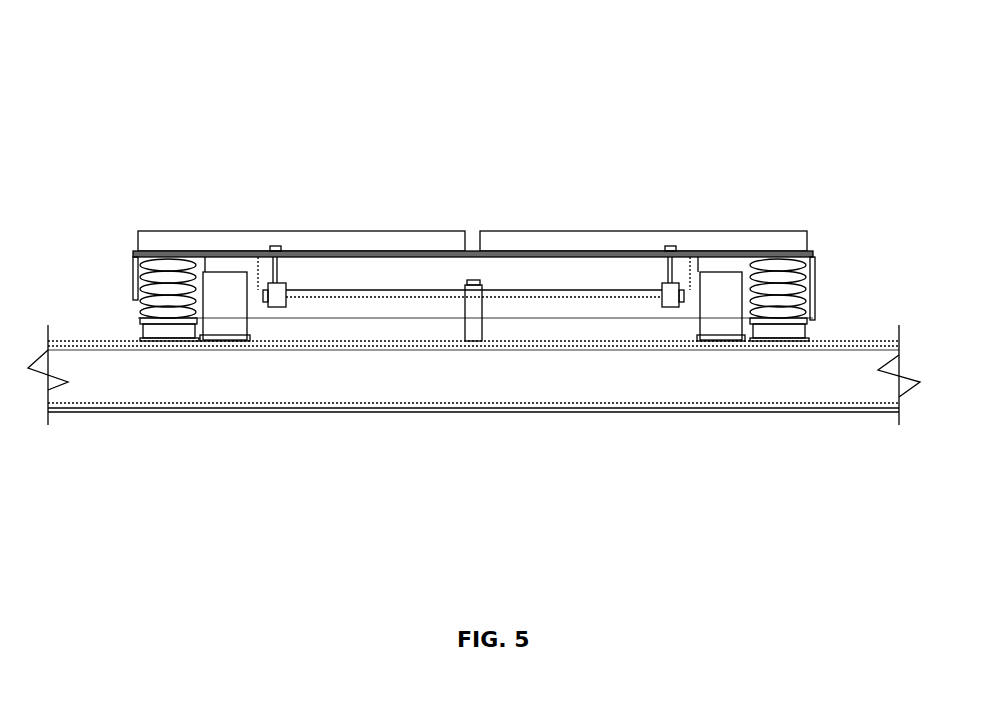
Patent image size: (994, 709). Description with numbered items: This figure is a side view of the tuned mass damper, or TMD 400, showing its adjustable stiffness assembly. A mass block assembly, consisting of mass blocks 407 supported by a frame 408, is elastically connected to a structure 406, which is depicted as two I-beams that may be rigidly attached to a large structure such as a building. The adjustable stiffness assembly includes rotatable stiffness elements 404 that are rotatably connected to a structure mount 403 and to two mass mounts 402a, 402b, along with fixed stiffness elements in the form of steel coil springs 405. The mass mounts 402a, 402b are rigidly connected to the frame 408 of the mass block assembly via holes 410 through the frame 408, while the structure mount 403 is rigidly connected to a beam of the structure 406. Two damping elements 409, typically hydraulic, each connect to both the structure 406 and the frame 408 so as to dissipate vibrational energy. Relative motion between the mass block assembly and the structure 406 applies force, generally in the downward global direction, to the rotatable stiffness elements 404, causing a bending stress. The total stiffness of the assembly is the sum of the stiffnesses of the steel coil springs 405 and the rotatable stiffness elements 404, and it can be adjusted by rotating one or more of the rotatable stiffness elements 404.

The TMD 400 is at (248, 132).
The mass mount 402a is at (278, 302).
The mass mount 402b is at (668, 300).
The structure mount 403 is at (476, 325).
The rotatable stiffness elements 404 is at (578, 297).
The steel coil springs 405 is at (155, 283).
The structure 406 is at (227, 390).
The mass blocks 407 is at (602, 242).
The frame 408 is at (743, 252).
The damping elements 409 is at (232, 287).
The holes 410 is at (670, 248).